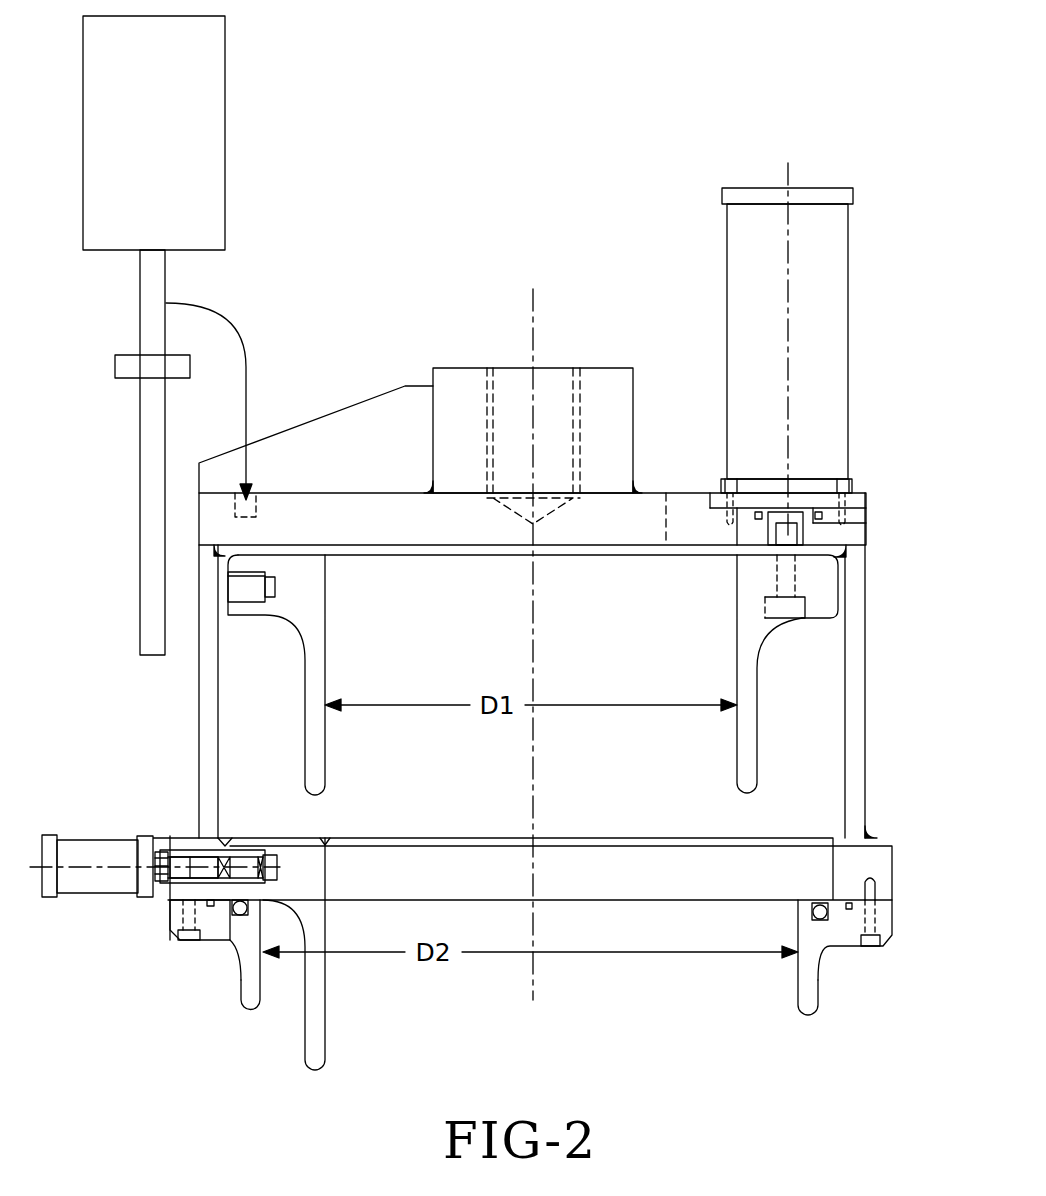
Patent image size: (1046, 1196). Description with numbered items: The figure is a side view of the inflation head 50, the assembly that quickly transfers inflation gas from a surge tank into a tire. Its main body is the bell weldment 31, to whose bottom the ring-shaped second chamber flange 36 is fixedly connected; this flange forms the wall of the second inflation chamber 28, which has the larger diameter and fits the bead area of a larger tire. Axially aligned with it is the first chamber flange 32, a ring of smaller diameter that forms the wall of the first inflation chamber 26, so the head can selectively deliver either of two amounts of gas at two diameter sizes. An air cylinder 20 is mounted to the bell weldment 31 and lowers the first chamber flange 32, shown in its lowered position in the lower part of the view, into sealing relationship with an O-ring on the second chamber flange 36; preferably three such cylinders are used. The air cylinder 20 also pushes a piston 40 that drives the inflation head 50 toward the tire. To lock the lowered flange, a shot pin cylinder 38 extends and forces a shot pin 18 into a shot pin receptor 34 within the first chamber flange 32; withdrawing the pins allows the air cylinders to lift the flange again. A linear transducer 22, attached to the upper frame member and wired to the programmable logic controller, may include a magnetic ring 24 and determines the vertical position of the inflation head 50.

The shot pin 18 is at (197, 828).
The air cylinder 20 is at (800, 312).
The linear transducer 22 is at (195, 205).
The magnetic ring 24 is at (128, 362).
The first inflation chamber 26 is at (222, 624).
The second inflation chamber 28 is at (235, 943).
The bell weldment 31 is at (853, 648).
The first chamber flange 32 is at (745, 758).
The shot pin receptor 34 is at (240, 587).
The second chamber flange 36 is at (256, 1000).
The shot pin cylinder 38 is at (105, 883).
The piston 40 is at (785, 572).
The inflation head 50 is at (374, 374).